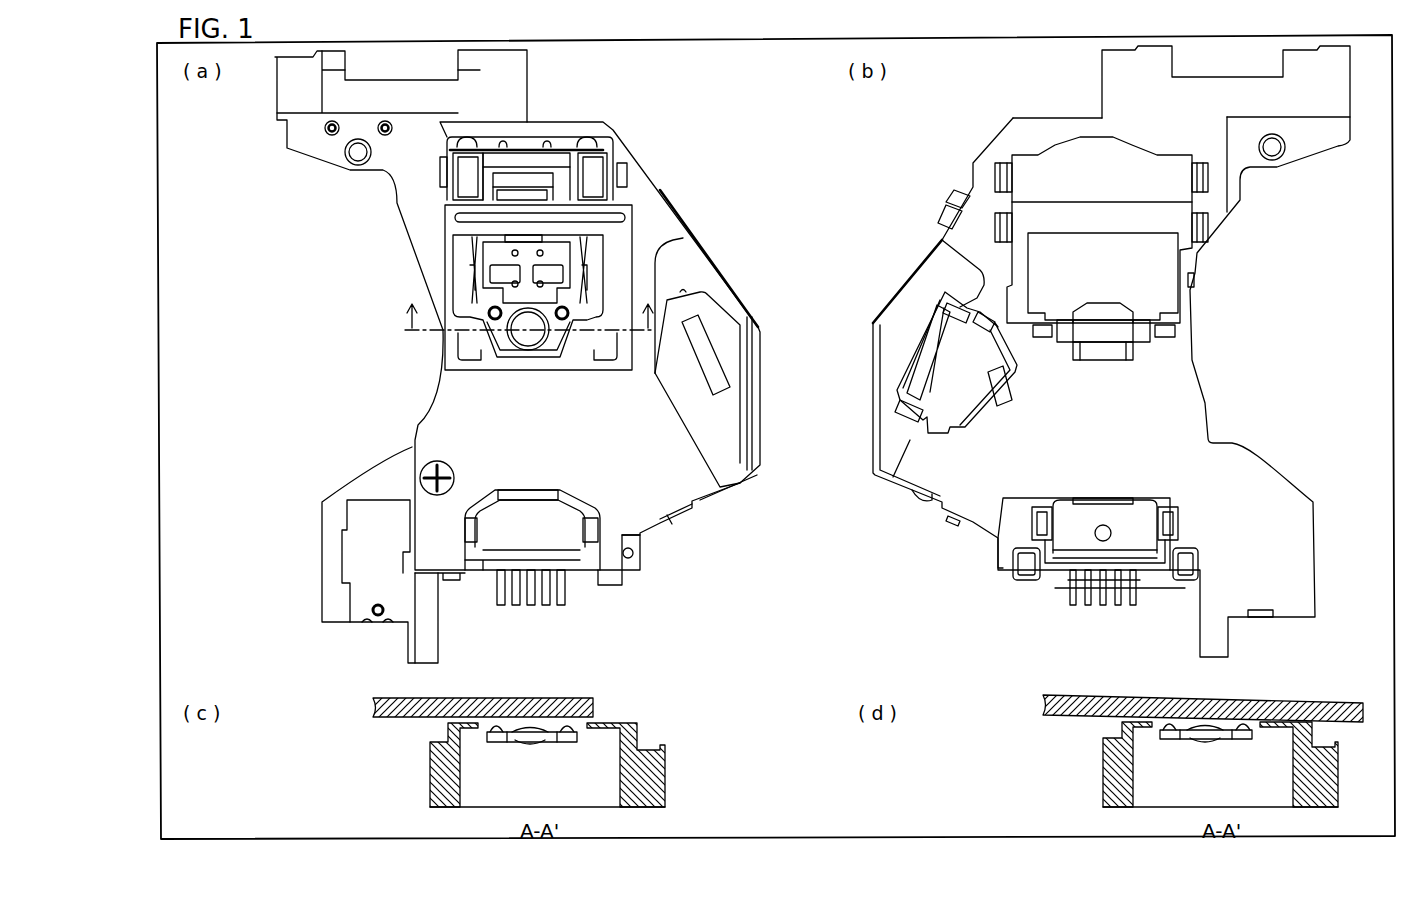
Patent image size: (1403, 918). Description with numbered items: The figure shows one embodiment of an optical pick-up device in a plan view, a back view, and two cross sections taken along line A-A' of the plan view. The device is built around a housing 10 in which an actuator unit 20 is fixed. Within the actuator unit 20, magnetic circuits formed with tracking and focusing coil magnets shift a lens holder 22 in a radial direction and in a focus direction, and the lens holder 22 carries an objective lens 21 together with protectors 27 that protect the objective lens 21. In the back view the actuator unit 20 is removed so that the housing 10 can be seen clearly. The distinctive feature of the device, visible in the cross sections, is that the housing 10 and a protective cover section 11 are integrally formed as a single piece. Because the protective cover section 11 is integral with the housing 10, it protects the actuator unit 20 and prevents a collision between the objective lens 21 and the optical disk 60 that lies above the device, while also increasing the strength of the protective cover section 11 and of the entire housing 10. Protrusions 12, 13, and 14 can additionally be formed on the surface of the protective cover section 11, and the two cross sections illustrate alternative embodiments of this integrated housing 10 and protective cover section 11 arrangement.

The housing 10 is at (522, 82).
The protective cover section 11 is at (1070, 217).
The protrusion 12 is at (475, 360).
The protrusion 13 is at (618, 348).
The protrusion 14 is at (455, 216).
The actuator unit 20 is at (495, 262).
The objective lens 21 is at (615, 340).
The lens holder 22 is at (458, 340).
The protector 27 is at (565, 306).
The optical disk 60 is at (554, 708).